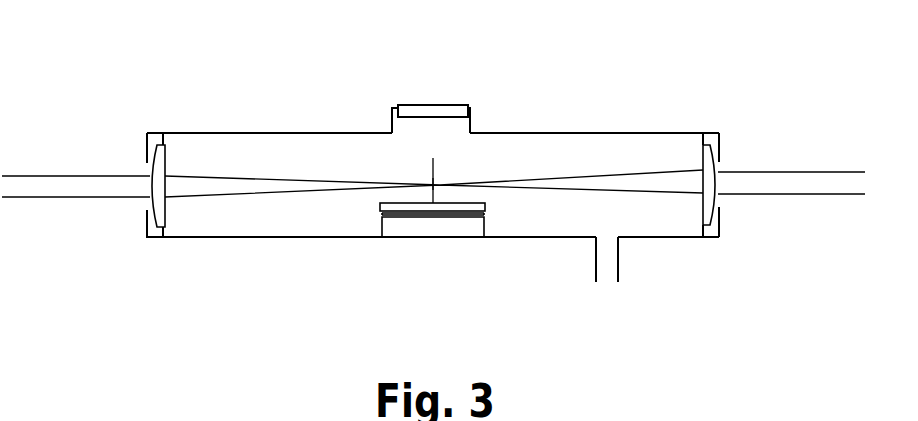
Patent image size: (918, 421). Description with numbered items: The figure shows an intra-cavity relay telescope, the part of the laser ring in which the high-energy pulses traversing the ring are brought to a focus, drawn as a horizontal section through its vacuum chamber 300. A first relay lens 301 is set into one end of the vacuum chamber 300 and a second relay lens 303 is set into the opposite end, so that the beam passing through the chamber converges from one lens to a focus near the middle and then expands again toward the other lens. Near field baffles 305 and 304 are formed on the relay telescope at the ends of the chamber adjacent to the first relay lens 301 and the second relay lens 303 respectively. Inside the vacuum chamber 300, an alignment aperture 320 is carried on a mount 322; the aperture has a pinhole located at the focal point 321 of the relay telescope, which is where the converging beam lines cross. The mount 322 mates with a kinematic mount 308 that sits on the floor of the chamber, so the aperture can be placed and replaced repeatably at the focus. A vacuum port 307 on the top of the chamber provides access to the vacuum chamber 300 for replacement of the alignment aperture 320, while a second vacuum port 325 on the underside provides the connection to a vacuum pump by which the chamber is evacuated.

The vacuum chamber 300 is at (197, 133).
The first relay lens 301 is at (167, 218).
The second relay lens 303 is at (720, 217).
The near field baffle 304 is at (720, 140).
The near field baffle 305 is at (142, 147).
The vacuum port 307 is at (420, 104).
The kinematic mount 308 is at (419, 227).
The alignment aperture 320 is at (435, 162).
The focal point 321 is at (435, 183).
The mount 322 is at (465, 203).
The vacuum port 325 is at (618, 257).